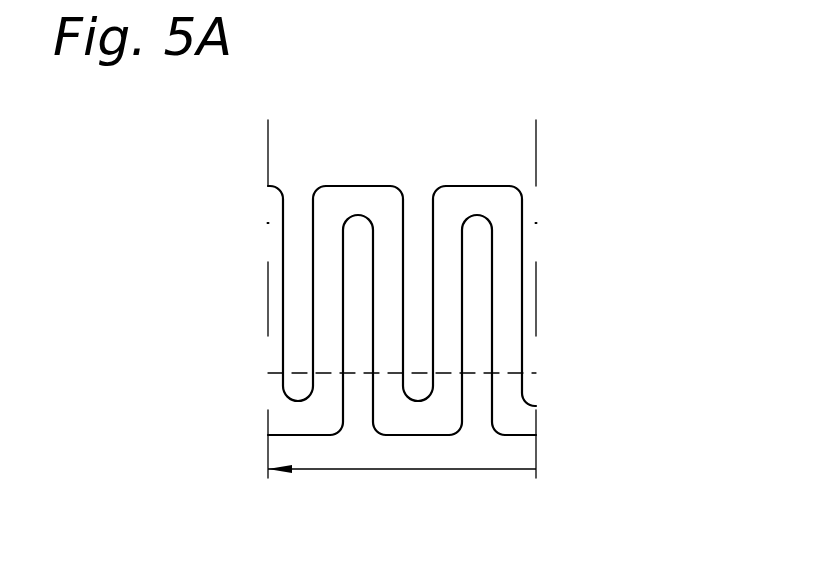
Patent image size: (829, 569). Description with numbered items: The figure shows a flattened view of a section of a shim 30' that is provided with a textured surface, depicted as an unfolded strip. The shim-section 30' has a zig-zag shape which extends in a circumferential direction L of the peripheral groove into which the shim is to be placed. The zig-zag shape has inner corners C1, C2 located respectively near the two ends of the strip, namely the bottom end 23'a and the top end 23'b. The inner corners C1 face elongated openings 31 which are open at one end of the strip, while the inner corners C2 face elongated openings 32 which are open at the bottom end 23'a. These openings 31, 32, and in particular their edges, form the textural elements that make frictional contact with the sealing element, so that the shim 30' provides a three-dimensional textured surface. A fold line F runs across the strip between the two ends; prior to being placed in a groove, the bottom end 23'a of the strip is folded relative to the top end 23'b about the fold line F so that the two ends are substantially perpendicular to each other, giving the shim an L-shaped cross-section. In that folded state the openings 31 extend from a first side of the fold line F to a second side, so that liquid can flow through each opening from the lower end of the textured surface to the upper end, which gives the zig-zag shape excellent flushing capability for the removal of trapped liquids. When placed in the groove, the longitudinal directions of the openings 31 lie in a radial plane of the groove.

The shim 30' is at (344, 228).
The elongated openings 31 is at (297, 217).
The elongated openings 32 is at (360, 397).
The bottom end 23'a is at (463, 448).
The top end 23'b is at (417, 163).
The inner corners C1 is at (302, 402).
The inner corners C2 is at (355, 215).
The fold line F is at (508, 372).
The circumferential direction L is at (355, 470).